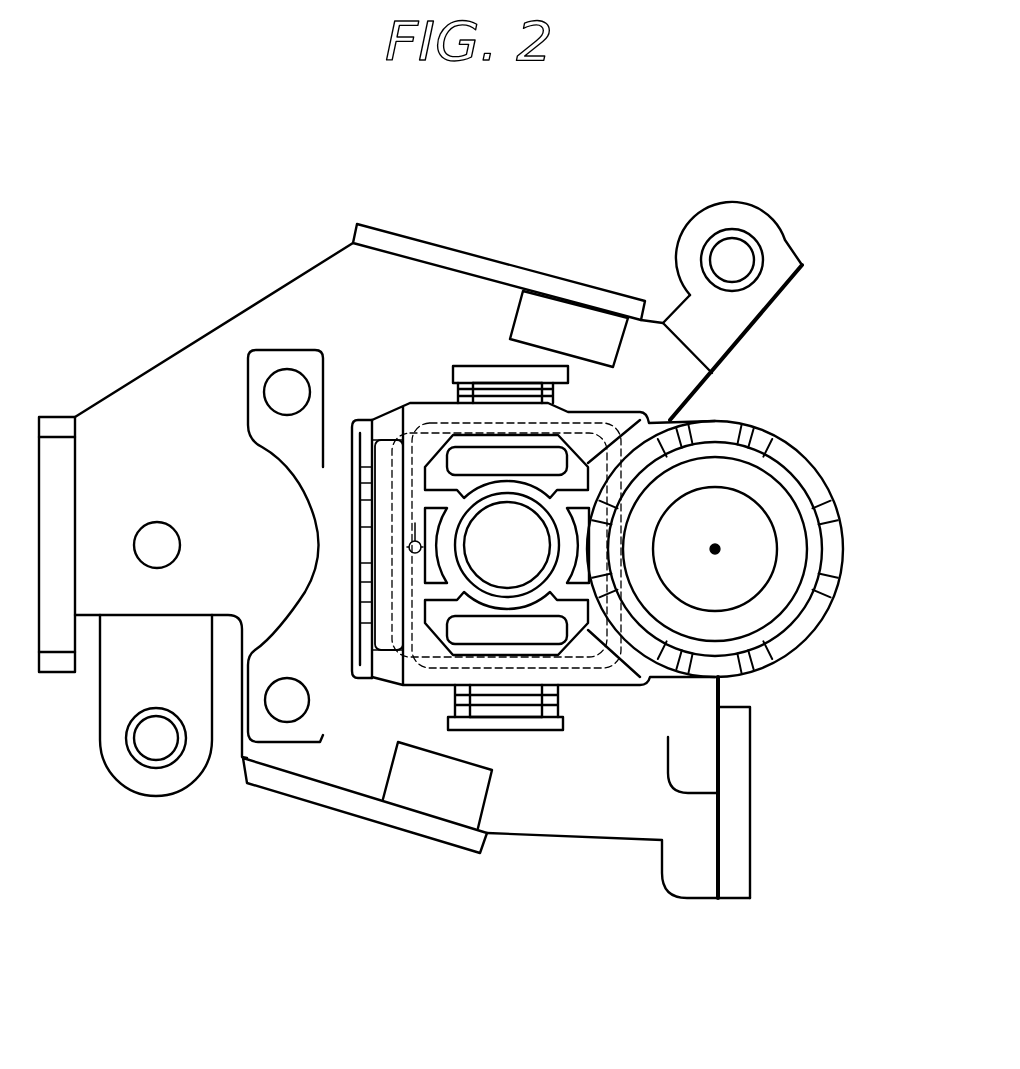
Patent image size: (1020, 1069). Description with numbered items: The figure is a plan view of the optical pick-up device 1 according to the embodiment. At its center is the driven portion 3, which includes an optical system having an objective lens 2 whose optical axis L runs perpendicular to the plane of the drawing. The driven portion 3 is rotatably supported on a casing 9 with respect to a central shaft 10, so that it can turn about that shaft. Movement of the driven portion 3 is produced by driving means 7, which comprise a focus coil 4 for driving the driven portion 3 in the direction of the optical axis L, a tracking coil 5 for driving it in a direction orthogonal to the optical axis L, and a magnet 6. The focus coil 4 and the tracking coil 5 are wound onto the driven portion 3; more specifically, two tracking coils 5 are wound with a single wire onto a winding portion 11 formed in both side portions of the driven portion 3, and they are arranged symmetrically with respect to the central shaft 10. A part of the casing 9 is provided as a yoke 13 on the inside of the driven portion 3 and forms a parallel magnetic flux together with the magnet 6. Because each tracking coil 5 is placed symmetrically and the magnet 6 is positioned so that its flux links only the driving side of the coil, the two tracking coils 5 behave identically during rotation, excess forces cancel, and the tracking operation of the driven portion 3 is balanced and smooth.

The optical pick-up device 1 is at (841, 214).
The objective lens 2 is at (765, 562).
The driven portion 3 is at (642, 650).
The focus coil 4 is at (363, 430).
The tracking coil 5 is at (452, 398).
The magnet 6 is at (598, 315).
The driving means 7 is at (561, 241).
The casing 9 is at (196, 380).
The central shaft 10 is at (487, 565).
The winding portion 11 is at (489, 372).
The yoke 13 is at (465, 462).
The optical axis L is at (720, 547).